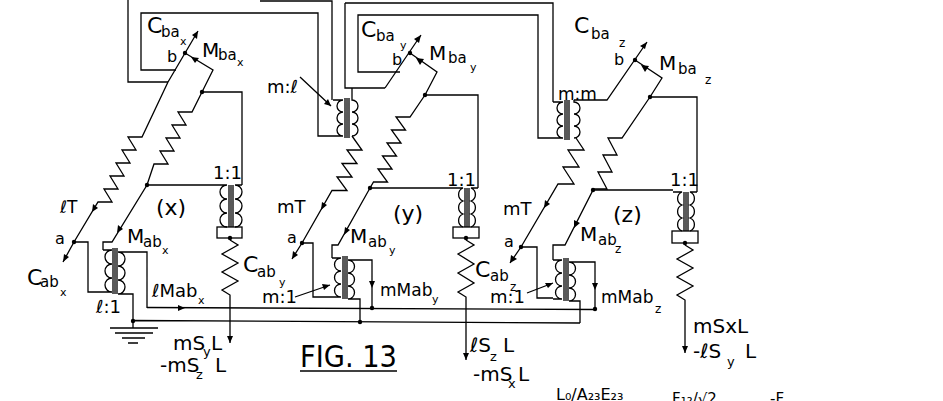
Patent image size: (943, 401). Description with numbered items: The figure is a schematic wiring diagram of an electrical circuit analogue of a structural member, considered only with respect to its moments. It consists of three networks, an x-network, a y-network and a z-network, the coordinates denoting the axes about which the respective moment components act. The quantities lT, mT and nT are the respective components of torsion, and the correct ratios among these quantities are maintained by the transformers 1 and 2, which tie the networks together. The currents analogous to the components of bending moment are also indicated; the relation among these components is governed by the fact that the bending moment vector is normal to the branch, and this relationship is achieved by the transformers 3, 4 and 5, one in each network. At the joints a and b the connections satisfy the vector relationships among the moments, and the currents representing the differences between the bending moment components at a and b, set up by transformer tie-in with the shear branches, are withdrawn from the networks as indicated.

The transformer 1 is at (351, 113).
The transformer 2 is at (574, 120).
The transformer 3 is at (125, 284).
The transformer 4 is at (352, 289).
The transformer 5 is at (574, 290).